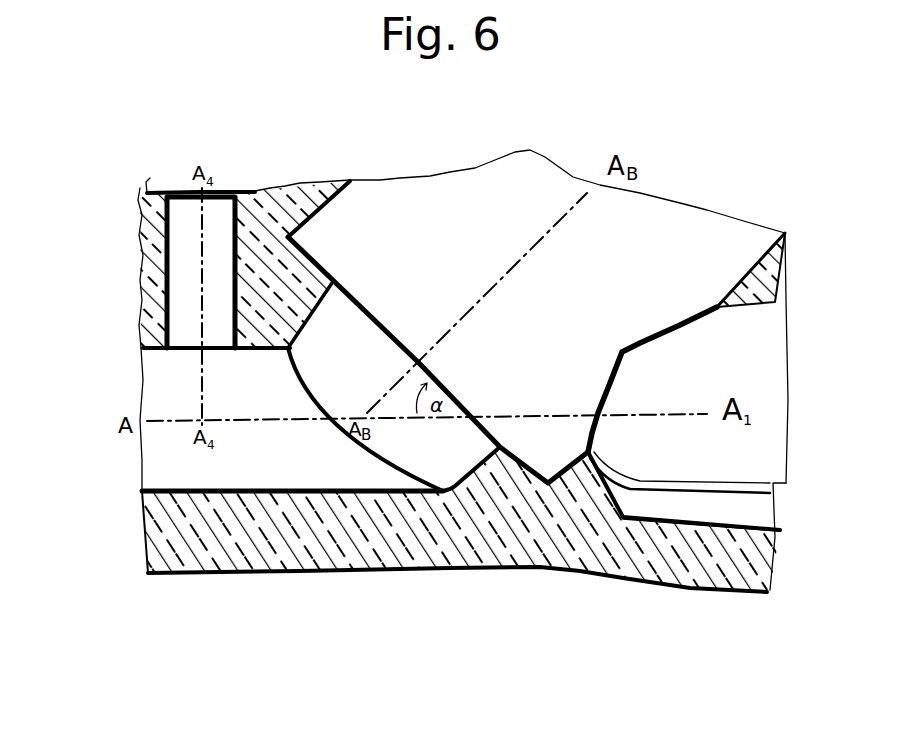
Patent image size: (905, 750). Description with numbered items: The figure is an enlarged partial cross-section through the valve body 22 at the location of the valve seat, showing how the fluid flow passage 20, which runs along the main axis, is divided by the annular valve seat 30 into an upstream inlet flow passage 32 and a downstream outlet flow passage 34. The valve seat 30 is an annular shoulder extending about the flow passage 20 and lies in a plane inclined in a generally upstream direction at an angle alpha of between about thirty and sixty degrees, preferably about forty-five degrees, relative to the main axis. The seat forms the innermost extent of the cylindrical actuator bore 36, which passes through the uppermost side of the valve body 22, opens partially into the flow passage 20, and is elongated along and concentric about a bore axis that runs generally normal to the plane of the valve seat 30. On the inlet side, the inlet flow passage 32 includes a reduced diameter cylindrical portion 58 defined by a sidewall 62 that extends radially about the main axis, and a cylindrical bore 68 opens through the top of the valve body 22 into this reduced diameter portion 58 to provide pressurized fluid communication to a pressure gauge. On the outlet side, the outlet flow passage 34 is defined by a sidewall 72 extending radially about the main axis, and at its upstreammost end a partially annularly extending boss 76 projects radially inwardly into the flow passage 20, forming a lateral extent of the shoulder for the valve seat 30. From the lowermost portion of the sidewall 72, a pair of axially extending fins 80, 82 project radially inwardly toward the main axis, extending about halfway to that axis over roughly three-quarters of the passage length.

The fluid flow passage 20 is at (140, 403).
The valve body 22 is at (197, 577).
The annular valve seat 30 is at (322, 257).
The inlet flow passage 32 is at (248, 481).
The outlet flow passage 34 is at (690, 385).
The actuator bore 36 is at (438, 309).
The reduced diameter cylindrical portion 58 is at (137, 495).
The sidewall 62 is at (297, 477).
The cylindrical bore 68 is at (217, 227).
The sidewall 72 is at (682, 505).
The partially annularly extending boss 76 is at (573, 450).
The axially extending fin 80 is at (650, 507).
The axially extending fin 82 is at (753, 497).